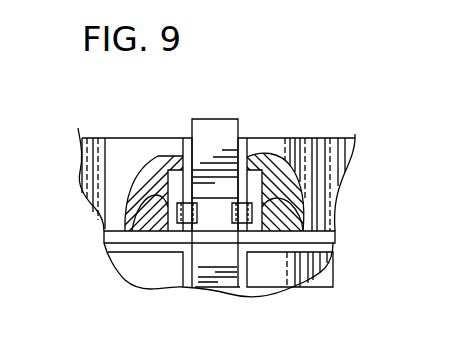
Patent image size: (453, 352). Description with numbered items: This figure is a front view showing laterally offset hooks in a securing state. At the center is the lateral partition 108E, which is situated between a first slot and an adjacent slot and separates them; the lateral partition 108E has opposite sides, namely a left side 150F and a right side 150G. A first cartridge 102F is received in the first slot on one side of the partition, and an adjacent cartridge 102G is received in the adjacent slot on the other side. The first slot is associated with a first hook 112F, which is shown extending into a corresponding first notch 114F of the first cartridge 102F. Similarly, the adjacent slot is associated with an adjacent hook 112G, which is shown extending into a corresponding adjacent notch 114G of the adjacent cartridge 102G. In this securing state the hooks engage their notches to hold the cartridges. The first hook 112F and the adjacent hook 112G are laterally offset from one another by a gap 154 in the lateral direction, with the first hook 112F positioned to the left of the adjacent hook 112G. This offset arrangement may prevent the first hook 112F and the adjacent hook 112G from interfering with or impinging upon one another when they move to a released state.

The lateral partition 108E is at (201, 119).
The left side 150F is at (186, 135).
The right side 150G is at (244, 134).
The first cartridge 102F is at (90, 137).
The adjacent cartridge 102G is at (332, 142).
The first hook 112F is at (143, 214).
The adjacent hook 112G is at (292, 214).
The first notch 114F is at (177, 214).
The adjacent notch 114G is at (252, 215).
The gap 154 is at (212, 218).